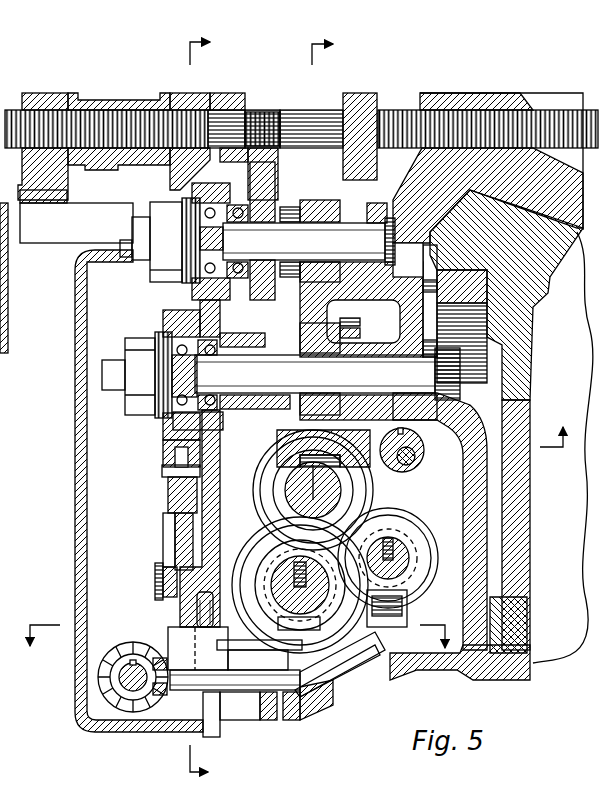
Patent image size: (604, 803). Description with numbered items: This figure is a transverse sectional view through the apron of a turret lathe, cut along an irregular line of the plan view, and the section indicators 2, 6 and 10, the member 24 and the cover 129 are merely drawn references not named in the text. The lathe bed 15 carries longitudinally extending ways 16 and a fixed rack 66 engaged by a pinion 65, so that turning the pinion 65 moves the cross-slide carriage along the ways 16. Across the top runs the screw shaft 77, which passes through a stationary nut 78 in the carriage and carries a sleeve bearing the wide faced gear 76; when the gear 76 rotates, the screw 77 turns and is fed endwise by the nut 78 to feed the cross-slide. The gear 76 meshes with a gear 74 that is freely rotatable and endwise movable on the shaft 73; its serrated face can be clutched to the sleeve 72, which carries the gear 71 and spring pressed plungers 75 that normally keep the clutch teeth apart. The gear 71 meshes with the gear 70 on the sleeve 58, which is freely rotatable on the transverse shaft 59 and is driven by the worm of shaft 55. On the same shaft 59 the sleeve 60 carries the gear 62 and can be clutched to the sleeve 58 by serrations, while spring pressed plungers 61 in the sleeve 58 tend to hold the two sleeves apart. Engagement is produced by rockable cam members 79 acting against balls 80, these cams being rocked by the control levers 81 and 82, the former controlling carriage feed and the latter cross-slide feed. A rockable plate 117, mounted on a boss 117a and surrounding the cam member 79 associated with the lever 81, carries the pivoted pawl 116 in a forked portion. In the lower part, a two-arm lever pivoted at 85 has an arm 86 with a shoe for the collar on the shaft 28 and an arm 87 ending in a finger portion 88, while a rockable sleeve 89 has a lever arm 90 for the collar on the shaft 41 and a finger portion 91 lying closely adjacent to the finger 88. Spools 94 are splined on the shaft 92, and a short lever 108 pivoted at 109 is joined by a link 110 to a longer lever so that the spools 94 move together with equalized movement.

The section line 2- 2 is at (207, 398).
The section line 6- 6 is at (239, 636).
The section line 10- 10 is at (438, 235).
The bed 15 is at (515, 492).
The ways 16 is at (522, 232).
The shaft 24 is at (412, 460).
The shaft 28 is at (380, 565).
The shaft 41 is at (290, 577).
The shaft 55 is at (290, 492).
The sleeve 58 is at (347, 471).
The shaft 59 is at (327, 374).
The sleeve 60 is at (275, 432).
The spring pressed plungers 61 is at (374, 336).
The gear 62 is at (242, 410).
The pinion 65 is at (493, 345).
The rack 66 is at (552, 256).
The gear 70 is at (362, 396).
The gear 71 is at (372, 322).
The sleeve 72 is at (327, 200).
The shaft 73 is at (309, 241).
The gear 74 is at (260, 295).
The spring pressed plungers 75 is at (298, 206).
The wide faced gear 76 is at (264, 108).
The screw shaft 77 is at (447, 110).
The stationary nut 78 is at (106, 107).
The cam members 79 is at (210, 195).
The balls 80 is at (232, 258).
The control lever 81 is at (125, 403).
The control lever 82 is at (156, 272).
The pivot 85 is at (300, 710).
The arm 86 is at (360, 657).
The arm 87 is at (195, 705).
The finger portion 88 is at (152, 692).
The rockable sleeve 89 is at (185, 640).
The lever arm 90 is at (242, 643).
The finger portion 91 is at (158, 650).
The shaft 92 is at (125, 682).
The spools 94 is at (100, 692).
The short lever 108 is at (165, 556).
The pivot 109 is at (156, 585).
The link 110 is at (165, 532).
The pivoted pawl 116 is at (170, 490).
The rockable plate 117 is at (165, 447).
The boss 117a is at (165, 427).
The housing cover 129 is at (5, 320).